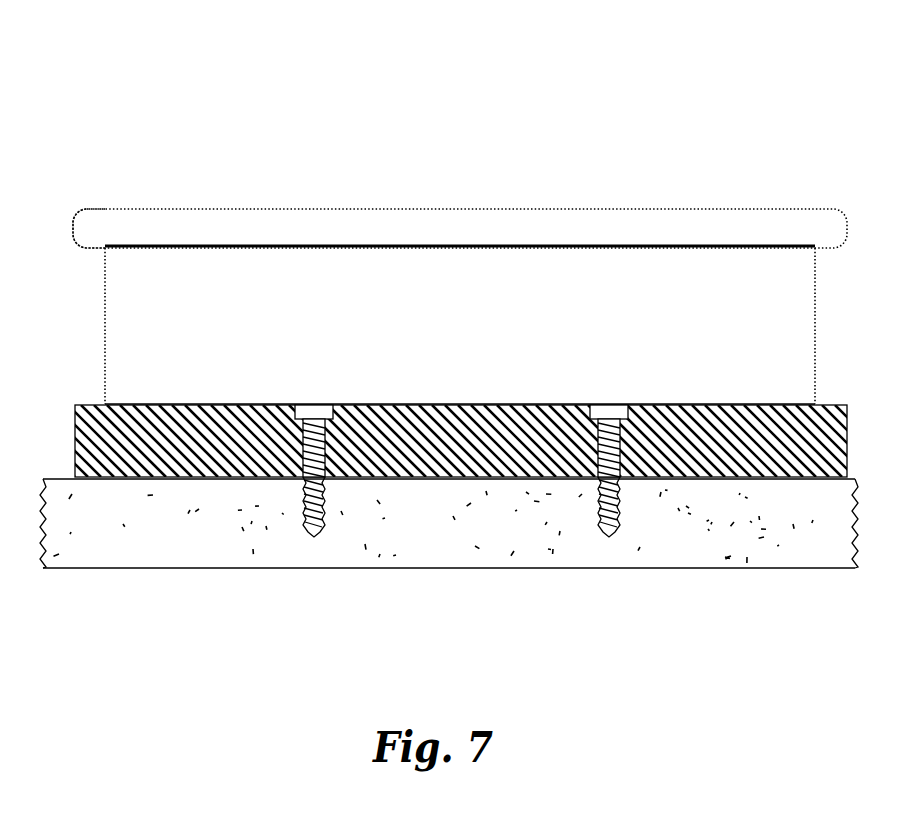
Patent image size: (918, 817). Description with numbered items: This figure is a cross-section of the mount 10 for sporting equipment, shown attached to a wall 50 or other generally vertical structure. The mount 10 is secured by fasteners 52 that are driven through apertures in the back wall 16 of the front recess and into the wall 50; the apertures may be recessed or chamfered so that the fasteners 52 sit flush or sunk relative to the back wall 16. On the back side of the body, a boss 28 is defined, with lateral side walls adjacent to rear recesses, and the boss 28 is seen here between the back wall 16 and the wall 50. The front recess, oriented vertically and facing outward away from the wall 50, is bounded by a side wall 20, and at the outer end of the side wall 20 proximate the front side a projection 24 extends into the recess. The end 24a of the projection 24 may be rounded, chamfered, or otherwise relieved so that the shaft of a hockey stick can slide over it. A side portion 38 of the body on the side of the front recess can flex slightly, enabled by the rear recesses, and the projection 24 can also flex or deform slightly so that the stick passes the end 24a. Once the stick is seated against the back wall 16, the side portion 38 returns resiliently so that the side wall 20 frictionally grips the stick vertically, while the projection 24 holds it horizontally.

The mount 10 is at (690, 137).
The back wall 16 is at (455, 357).
The side wall 20 is at (352, 334).
The projection 24 is at (213, 230).
The end 24a is at (137, 225).
The boss 28 is at (688, 445).
The side portion 38 is at (453, 272).
The wall 50 is at (237, 528).
The fasteners 52 is at (312, 507).